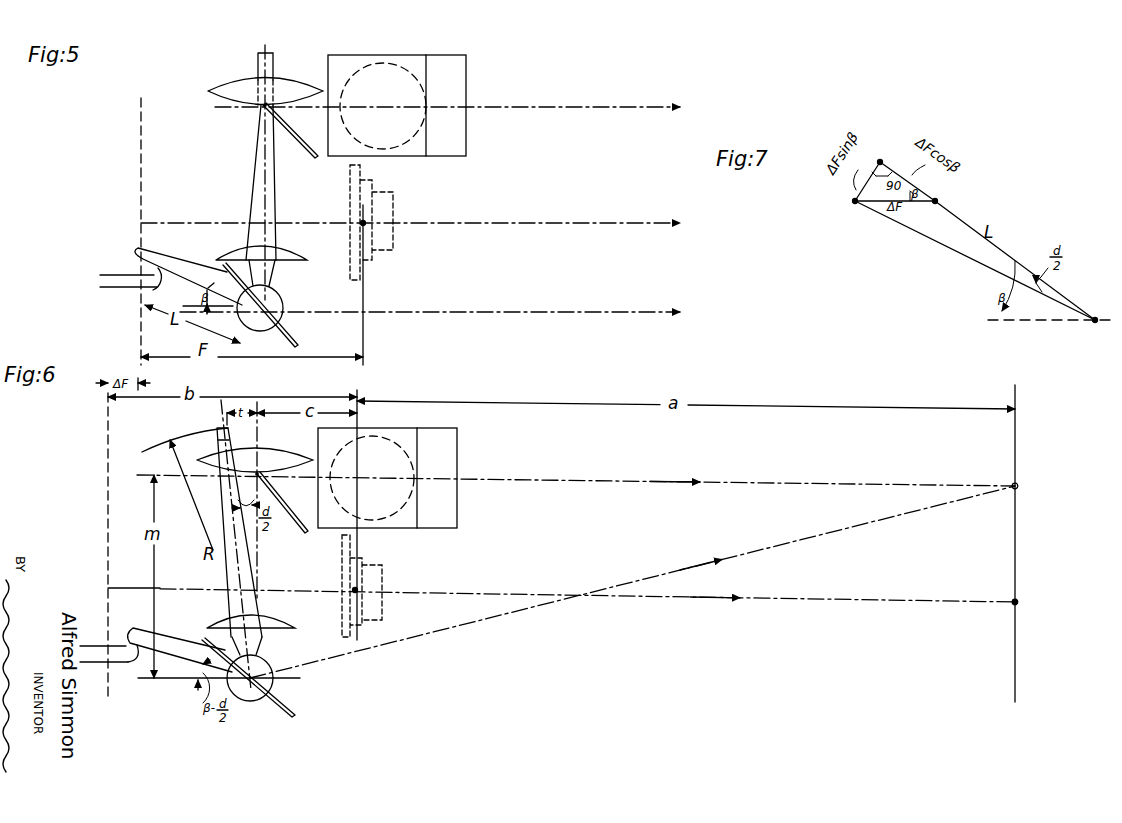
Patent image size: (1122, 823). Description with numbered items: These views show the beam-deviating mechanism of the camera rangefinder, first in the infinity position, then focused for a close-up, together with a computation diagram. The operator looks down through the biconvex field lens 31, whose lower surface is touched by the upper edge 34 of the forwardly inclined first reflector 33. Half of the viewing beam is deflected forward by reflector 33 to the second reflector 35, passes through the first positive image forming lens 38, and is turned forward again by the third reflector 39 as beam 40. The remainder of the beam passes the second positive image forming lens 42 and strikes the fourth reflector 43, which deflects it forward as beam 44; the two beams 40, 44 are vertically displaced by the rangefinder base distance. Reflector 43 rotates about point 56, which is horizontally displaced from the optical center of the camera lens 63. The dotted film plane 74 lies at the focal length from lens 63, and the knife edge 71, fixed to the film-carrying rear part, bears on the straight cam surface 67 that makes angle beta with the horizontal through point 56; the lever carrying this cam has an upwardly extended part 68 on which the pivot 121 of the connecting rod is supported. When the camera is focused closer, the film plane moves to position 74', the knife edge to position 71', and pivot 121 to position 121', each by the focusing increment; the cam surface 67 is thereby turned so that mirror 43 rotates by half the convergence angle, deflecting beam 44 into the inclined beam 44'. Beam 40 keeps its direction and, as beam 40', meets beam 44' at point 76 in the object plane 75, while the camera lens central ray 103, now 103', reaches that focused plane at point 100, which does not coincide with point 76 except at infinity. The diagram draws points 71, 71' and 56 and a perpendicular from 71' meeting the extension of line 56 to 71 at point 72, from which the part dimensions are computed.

In FIG. 5, the field lens 31 is at (306, 82).
In FIG. 6, the field lens 31 is at (270, 454).
In FIG. 5, the first reflector 33 is at (309, 156).
In FIG. 6, the first reflector 33 is at (300, 530).
In FIG. 5, the upper edge of the first reflector 34 is at (263, 106).
In FIG. 6, the upper edge of the first reflector 34 is at (262, 478).
In FIG. 5, the second reflector 35 is at (344, 55).
In FIG. 6, the second reflector 35 is at (364, 428).
In FIG. 5, the first positive image forming lens 38 is at (409, 72).
In FIG. 6, the first positive image forming lens 38 is at (406, 450).
In FIG. 5, the third reflector 39 is at (434, 55).
In FIG. 6, the third reflector 39 is at (432, 428).
In FIG. 5, the forward beam from third reflector 40 is at (447, 96).
In FIG. 6, the beam 40 in close-up position 40' is at (576, 471).
In FIG. 5, the second positive image forming lens 42 is at (284, 256).
In FIG. 6, the second positive image forming lens 42 is at (276, 624).
In FIG. 5, the fourth reflector 43 is at (289, 338).
In FIG. 6, the fourth reflector 43 is at (291, 710).
In FIG. 5, the forward beam from fourth reflector 44 is at (430, 301).
In FIG. 6, the deflected beam 44 in close-up position 44' is at (632, 582).
In FIG. 5, the point of intersection of fourth reflector with line of vision 56 is at (268, 302).
In FIG. 7, the point of intersection of fourth reflector with line of vision 56 is at (1050, 307).
In FIG. 6, the point of intersection of fourth reflector with line of vision 56 is at (256, 674).
In FIG. 5, the camera lens 63 is at (390, 192).
In FIG. 6, the camera lens 63 is at (383, 575).
In FIG. 5, the inclined cam surface 67 is at (194, 278).
In FIG. 6, the inclined cam surface 67 is at (196, 664).
In FIG. 5, the upwardly extended part of lever 68 is at (256, 152).
In FIG. 6, the upwardly extended part of lever 68 is at (222, 502).
In FIG. 5, the knife edge 71 is at (188, 265).
In FIG. 7, the knife edge 71 is at (1014, 255).
In FIG. 7, the knife edge in close-up position 71' is at (960, 241).
In FIG. 6, the knife edge in close-up position 71' is at (177, 634).
In FIG. 7, the intersection point on extension of line 56-71 72 is at (902, 170).
In FIG. 5, the film plane 74 is at (122, 231).
In FIG. 6, the film plane in close-up position 74' is at (83, 546).
In FIG. 6, the object plane 75 is at (1015, 549).
In FIG. 6, the intersection point of beams 40' and 44' 76 is at (1028, 476).
In FIG. 6, the point on central ray in focused plane 100 is at (1032, 603).
In FIG. 5, the central ray of camera lens beam 103 is at (410, 211).
In FIG. 6, the central ray of camera lens beam in close-up position 103' is at (561, 607).
In FIG. 5, the pivot 121 is at (246, 67).
In FIG. 6, the pivot in close-up position 121' is at (212, 521).